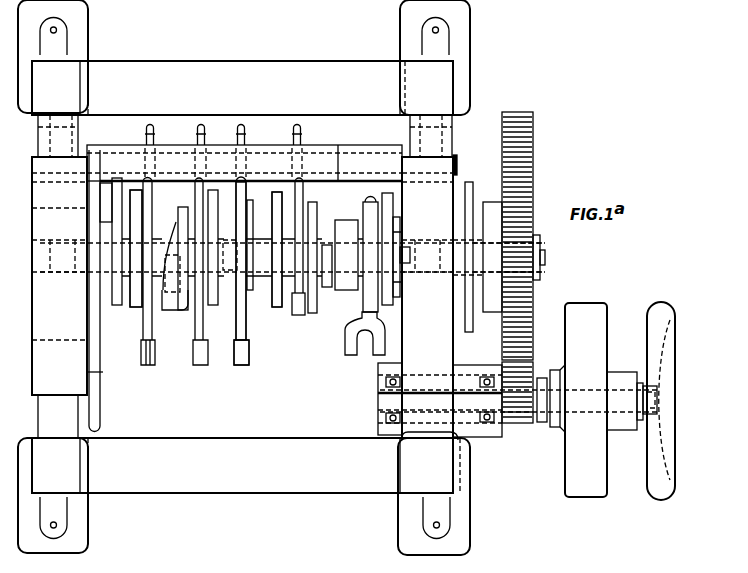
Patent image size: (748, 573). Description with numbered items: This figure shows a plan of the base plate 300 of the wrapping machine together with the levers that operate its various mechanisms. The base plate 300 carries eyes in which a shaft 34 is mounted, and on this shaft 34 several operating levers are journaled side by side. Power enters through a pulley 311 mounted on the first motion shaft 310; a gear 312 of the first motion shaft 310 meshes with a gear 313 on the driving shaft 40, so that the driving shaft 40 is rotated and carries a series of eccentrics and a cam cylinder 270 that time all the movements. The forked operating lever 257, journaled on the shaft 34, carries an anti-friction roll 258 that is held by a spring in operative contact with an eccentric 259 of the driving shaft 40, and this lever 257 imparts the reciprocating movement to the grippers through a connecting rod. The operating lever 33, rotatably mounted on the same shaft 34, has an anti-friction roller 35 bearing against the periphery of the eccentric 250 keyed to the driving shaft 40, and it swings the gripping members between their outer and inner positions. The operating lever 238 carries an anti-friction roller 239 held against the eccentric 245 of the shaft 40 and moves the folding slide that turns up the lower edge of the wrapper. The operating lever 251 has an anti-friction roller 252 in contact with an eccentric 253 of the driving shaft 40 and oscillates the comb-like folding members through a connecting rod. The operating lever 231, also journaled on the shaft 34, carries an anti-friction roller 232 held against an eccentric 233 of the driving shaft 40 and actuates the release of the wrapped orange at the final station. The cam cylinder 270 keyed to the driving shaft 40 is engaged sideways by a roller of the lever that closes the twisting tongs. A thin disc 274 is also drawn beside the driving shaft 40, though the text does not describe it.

The shaft 34 is at (457, 171).
The gear 313 is at (533, 157).
The driving shaft 40 is at (494, 250).
The eccentric 253 is at (140, 212).
The operating lever 238 is at (200, 192).
The operating lever 33 is at (254, 230).
The operating lever 231 is at (306, 195).
The eccentric 259 is at (392, 200).
The anti-friction roll 258 is at (401, 246).
The anti-friction roller 252 is at (128, 275).
The operating lever 251 is at (146, 325).
The cam cylinder 270 is at (186, 310).
The anti-friction roller 239 is at (208, 334).
The eccentric 245 is at (230, 344).
The anti-friction roller 35 is at (254, 290).
The eccentric 250 is at (277, 308).
The anti-friction roller 232 is at (320, 270).
The eccentric 233 is at (302, 316).
The operating lever 257 is at (380, 314).
The thin disc 274 is at (472, 330).
The pulley 311 is at (580, 308).
The base plate 300 is at (100, 373).
The first motion shaft 310 is at (466, 408).
The gear 312 is at (523, 424).